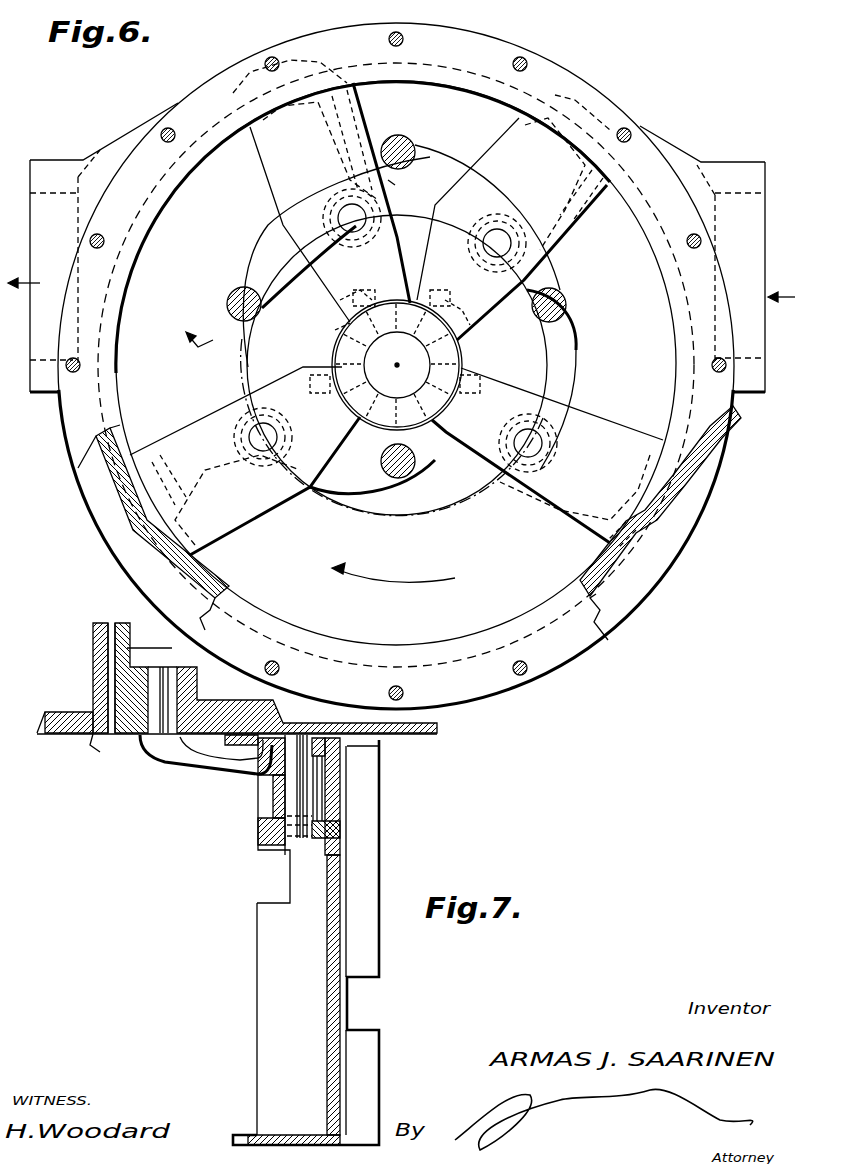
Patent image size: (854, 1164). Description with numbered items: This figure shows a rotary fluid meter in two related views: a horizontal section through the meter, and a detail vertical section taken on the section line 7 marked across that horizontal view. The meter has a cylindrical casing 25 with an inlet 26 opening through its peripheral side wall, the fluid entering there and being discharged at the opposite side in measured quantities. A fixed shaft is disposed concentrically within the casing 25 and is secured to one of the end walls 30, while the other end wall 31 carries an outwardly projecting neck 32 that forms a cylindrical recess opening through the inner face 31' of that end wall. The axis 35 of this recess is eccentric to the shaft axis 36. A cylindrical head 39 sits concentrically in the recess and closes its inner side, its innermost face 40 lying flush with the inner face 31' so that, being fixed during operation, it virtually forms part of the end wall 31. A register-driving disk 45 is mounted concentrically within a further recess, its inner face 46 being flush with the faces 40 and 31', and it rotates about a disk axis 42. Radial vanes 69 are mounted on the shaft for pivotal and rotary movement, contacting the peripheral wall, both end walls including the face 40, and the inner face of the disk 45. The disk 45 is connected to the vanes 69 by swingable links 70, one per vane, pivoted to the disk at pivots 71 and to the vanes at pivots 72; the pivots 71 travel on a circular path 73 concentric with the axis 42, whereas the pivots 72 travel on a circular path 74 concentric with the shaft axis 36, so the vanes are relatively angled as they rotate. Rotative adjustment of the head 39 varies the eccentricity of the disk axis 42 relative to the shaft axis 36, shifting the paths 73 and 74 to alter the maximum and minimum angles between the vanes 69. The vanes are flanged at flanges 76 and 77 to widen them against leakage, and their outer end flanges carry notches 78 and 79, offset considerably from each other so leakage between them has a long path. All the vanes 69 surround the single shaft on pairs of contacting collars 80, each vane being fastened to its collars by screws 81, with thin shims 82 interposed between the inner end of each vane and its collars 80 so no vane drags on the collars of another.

In FIG. 6, the section line 7 is at (191, 329).
In FIG. 6, the cylindrical casing 25 is at (660, 523).
In FIG. 6, the inlet 26 is at (745, 394).
In FIG. 6, the end wall 30 is at (458, 353).
In FIG. 7, the end wall 31 is at (237, 692).
In FIG. 7, the inner face 31' is at (75, 751).
In FIG. 7, the outwardly projecting neck 32 is at (92, 635).
In FIG. 6, the axis 35 is at (472, 305).
In FIG. 6, the shaft axis 36 is at (398, 367).
In FIG. 7, the cylindrical head 39 is at (118, 622).
In FIG. 7, the innermost face 40 is at (125, 738).
In FIG. 6, the disk axis 42 is at (345, 326).
In FIG. 7, the register-driving disk 45 is at (245, 697).
In FIG. 7, the inner face 46 is at (235, 764).
In FIG. 6, the radial vanes 69 is at (258, 166).
In FIG. 7, the radial vanes 69 is at (333, 947).
In FIG. 6, the swingable links 70 is at (265, 255).
In FIG. 7, the swingable links 70 is at (185, 764).
In FIG. 6, the pivots 71 is at (404, 138).
In FIG. 7, the pivots 71 is at (155, 676).
In FIG. 6, the pivots 72 is at (352, 218).
In FIG. 7, the pivots 72 is at (300, 805).
In FIG. 6, the circular path 73 is at (265, 226).
In FIG. 6, the circular path 74 is at (455, 512).
In FIG. 7, the flange 76 is at (268, 987).
In FIG. 6, the flange 77 is at (403, 186).
In FIG. 7, the flange 77 is at (355, 879).
In FIG. 6, the notch 78 is at (267, 118).
In FIG. 7, the notch 78 is at (278, 875).
In FIG. 6, the notch 79 is at (345, 100).
In FIG. 7, the notch 79 is at (360, 1016).
In FIG. 6, the collars 80 is at (350, 356).
In FIG. 6, the screws 81 is at (398, 265).
In FIG. 6, the thin shims 82 is at (345, 303).